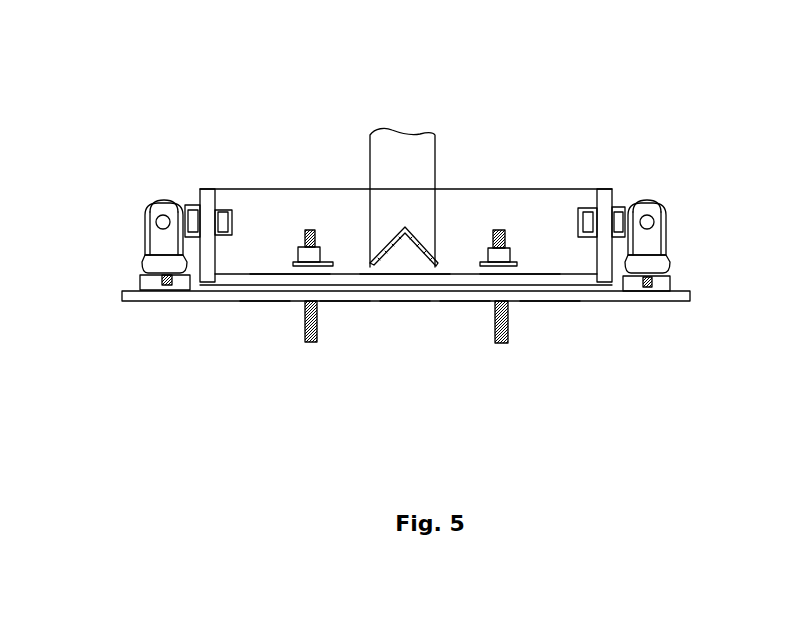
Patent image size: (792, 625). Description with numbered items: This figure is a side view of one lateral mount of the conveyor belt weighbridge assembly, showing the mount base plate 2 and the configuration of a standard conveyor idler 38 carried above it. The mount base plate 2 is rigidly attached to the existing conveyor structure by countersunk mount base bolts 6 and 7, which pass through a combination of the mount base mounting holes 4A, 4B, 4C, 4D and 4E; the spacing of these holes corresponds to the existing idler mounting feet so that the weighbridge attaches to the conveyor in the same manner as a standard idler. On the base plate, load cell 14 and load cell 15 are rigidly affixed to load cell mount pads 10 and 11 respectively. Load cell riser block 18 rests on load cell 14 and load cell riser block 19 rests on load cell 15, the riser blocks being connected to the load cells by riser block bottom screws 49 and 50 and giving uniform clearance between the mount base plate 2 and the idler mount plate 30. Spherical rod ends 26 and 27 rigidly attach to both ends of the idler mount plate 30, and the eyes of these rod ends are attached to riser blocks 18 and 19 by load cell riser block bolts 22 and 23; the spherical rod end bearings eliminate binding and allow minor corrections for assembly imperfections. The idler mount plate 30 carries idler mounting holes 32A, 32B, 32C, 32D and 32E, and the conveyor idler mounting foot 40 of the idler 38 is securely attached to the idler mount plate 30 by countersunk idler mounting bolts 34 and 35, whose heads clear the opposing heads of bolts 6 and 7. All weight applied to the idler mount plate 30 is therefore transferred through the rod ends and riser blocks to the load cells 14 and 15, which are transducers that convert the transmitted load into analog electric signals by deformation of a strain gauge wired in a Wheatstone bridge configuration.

The mount base plate 2 is at (213, 295).
The mount base mounting hole 4A is at (263, 300).
The mount base mounting hole 4B is at (317, 322).
The mount base mounting hole 4C is at (405, 300).
The mount base mounting hole 4D is at (493, 320).
The mount base mounting hole 4E is at (548, 300).
The mount base bolt 6 is at (307, 337).
The mount base bolt 7 is at (508, 337).
The load cell mount pad 10 is at (157, 282).
The load cell mount pad 11 is at (662, 283).
The load cell 14 is at (155, 263).
The load cell 15 is at (658, 265).
The load cell riser block 18 is at (152, 242).
The load cell riser block 19 is at (658, 243).
The load cell riser block bolt 22 is at (162, 217).
The load cell riser block bolt 23 is at (650, 220).
The spherical rod end 26 is at (158, 210).
The spherical rod end 27 is at (645, 208).
The idler mount plate 30 is at (466, 208).
The idler mounting hole 32A is at (263, 273).
The idler mounting hole 32B is at (306, 272).
The idler mounting hole 32C is at (407, 277).
The idler mounting hole 32D is at (512, 273).
The idler mounting hole 32E is at (548, 273).
The idler mounting bolt 34 is at (308, 230).
The idler mounting bolt 35 is at (500, 230).
The conveyor idler assembly 38 is at (400, 163).
The conveyor idler mounting foot 40 is at (352, 270).
The riser block bottom screw 49 is at (165, 280).
The riser block bottom screw 50 is at (647, 282).